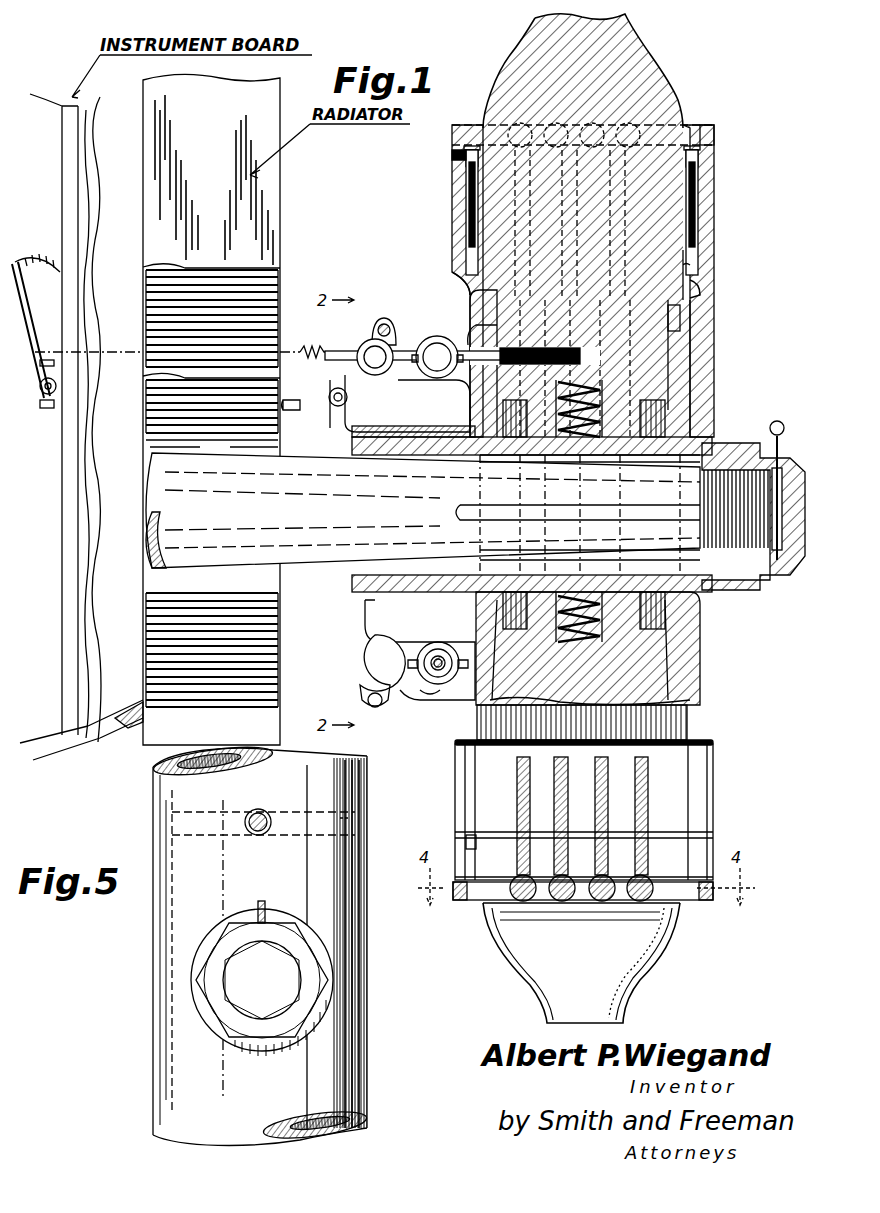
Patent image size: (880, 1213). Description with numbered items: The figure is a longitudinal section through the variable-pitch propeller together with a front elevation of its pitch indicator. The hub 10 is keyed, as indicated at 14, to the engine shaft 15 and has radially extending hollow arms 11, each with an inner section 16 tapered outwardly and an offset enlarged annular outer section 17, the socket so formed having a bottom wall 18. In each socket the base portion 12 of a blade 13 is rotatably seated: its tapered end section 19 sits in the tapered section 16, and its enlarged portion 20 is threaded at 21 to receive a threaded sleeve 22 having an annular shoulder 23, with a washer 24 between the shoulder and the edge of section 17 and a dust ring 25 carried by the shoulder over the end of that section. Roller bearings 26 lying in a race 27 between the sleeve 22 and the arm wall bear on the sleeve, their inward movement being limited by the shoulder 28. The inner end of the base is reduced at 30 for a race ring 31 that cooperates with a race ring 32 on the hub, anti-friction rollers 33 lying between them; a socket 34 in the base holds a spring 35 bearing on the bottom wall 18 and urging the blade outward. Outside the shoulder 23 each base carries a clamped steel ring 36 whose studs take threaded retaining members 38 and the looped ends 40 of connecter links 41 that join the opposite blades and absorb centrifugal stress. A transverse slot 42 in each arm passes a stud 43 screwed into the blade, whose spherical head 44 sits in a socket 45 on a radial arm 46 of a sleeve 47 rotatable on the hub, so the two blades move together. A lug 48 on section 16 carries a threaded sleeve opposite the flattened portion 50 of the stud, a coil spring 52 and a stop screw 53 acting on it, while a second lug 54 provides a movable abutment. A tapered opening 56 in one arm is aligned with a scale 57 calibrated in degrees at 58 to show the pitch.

In FIG. 1, the hub 10 is at (702, 455).
In FIG. 5, the hub 10 is at (318, 943).
In FIG. 1, the hollow arm 11 is at (690, 375).
In FIG. 5, the hollow arm 11 is at (373, 853).
In FIG. 1, the base portion 12 is at (671, 364).
In FIG. 1, the blade 13 is at (533, 30).
In FIG. 1, the key 14 is at (662, 508).
In FIG. 1, the engine shaft 15 is at (322, 570).
In FIG. 1, the inner section 16 is at (478, 310).
In FIG. 5, the inner section 16 is at (170, 790).
In FIG. 1, the outer enlarged annular section 17 is at (714, 262).
In FIG. 1, the bottom wall 18 is at (680, 440).
In FIG. 1, the tapered end section 19 is at (700, 343).
In FIG. 1, the enlarged portion 20 is at (700, 294).
In FIG. 1, the exterior threads 21 is at (688, 258).
In FIG. 1, the threaded sleeve 22 is at (472, 270).
In FIG. 1, the annular shoulder 23 is at (705, 136).
In FIG. 1, the washer 24 is at (705, 160).
In FIG. 1, the dust ring 25 is at (700, 172).
In FIG. 1, the roller bearings 26 is at (697, 218).
In FIG. 1, the race 27 is at (700, 200).
In FIG. 1, the shoulder 28 is at (452, 244).
In FIG. 1, the reduced portion 30 is at (692, 402).
In FIG. 1, the race ring 31 is at (503, 414).
In FIG. 1, the race ring 32 is at (503, 430).
In FIG. 1, the anti-friction rollers 33 is at (482, 455).
In FIG. 1, the socket 34 is at (565, 442).
In FIG. 1, the spring 35 is at (600, 442).
In FIG. 1, the steel ring 36 is at (690, 130).
In FIG. 1, the threaded retaining members 38 is at (530, 902).
In FIG. 1, the looped end 40 is at (516, 875).
In FIG. 1, the connecter cable or link 41 is at (517, 808).
In FIG. 1, the transverse slot 42 is at (474, 327).
In FIG. 1, the pin or stud 43 is at (455, 385).
In FIG. 1, the spherical head 44 is at (380, 352).
In FIG. 1, the socket 45 is at (358, 348).
In FIG. 1, the radial arm 46 is at (380, 420).
In FIG. 1, the sleeve 47 is at (402, 437).
In FIG. 1, the lug 48 is at (432, 340).
In FIG. 1, the flattened portion 50 is at (440, 648).
In FIG. 1, the coil spring 52 is at (428, 700).
In FIG. 1, the stop screw 53 is at (432, 650).
In FIG. 1, the second lug 54 is at (425, 690).
In FIG. 5, the tapered opening 56 is at (268, 813).
In FIG. 1, the scale 57 is at (690, 318).
In FIG. 5, the scale 57 is at (340, 818).
In FIG. 5, the degree calibration 58 is at (254, 835).